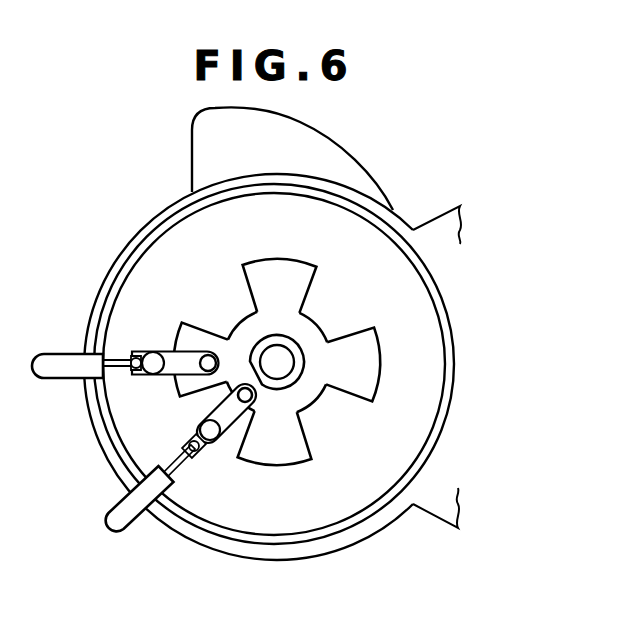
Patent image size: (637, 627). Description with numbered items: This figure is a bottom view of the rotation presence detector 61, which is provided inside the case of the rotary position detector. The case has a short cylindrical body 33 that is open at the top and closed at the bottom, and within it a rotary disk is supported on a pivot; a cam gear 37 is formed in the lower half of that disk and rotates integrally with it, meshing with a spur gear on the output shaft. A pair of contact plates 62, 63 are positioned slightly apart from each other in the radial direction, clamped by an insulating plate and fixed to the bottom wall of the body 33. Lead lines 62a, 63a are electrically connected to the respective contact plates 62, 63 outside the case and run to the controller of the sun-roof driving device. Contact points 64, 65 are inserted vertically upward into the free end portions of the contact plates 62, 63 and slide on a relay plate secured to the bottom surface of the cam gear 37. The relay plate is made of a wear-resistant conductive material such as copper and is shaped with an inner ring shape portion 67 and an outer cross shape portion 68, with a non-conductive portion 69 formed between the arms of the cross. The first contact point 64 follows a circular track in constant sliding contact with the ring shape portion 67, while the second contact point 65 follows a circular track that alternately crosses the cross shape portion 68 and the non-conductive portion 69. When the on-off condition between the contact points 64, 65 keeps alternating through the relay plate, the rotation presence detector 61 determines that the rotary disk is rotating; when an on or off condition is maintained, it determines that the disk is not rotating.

The body 33 is at (113, 266).
The cam gear 37 is at (157, 238).
The rotation presence detector 61 is at (100, 458).
The contact plate 62 is at (214, 410).
The lead line 62a is at (139, 522).
The contact plate 63 is at (172, 353).
The lead line 63a is at (72, 355).
The first contact point 64 is at (253, 404).
The second contact point 65 is at (209, 352).
The inner ring shape portion 67 is at (324, 398).
The outer cross shape portion 68 is at (278, 263).
The non-conductive portion 69 is at (323, 300).